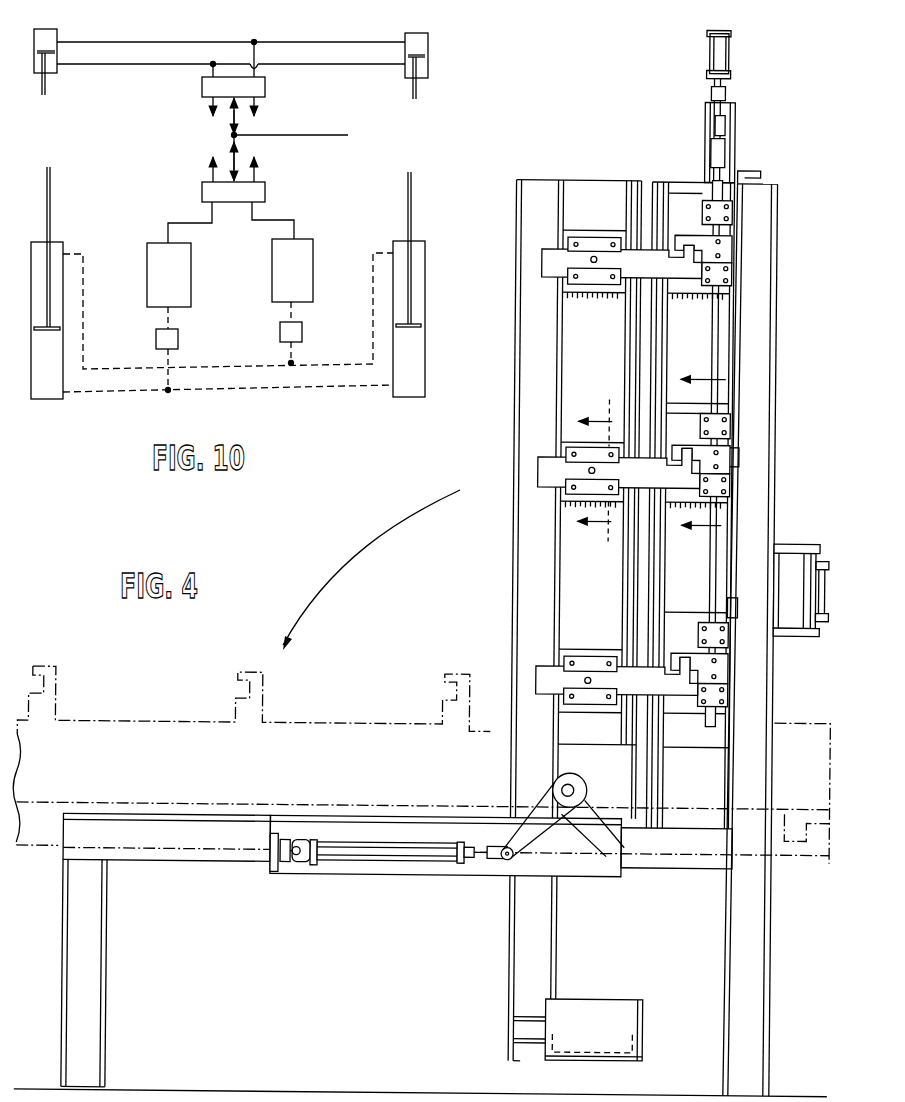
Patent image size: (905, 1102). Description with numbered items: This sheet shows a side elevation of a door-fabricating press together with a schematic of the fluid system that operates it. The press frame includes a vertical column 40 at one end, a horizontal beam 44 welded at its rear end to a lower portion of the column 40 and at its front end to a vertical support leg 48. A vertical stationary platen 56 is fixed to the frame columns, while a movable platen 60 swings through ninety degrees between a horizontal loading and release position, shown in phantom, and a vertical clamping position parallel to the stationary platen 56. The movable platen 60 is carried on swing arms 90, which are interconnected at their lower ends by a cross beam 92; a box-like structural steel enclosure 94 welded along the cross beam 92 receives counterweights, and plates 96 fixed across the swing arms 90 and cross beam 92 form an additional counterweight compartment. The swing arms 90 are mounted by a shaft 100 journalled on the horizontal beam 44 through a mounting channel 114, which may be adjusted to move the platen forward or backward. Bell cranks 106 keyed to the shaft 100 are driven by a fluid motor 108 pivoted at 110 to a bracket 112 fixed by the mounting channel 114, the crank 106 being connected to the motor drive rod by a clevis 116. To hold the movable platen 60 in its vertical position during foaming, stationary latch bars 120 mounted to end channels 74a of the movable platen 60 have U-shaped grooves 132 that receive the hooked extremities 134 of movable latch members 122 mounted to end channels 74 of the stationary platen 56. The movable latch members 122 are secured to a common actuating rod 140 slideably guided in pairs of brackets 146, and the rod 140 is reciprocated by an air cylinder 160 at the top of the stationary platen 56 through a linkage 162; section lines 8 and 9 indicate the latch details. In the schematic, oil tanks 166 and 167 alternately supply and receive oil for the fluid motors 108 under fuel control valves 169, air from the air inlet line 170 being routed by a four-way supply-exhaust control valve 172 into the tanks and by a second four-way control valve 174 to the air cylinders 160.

In FIG. 10, the air cylinder 160 is at (50, 30).
In FIG. 4, the air cylinder 160 is at (712, 52).
In FIG. 10, the second four-way control valve 174 is at (265, 86).
In FIG. 10, the air inlet line 170 is at (280, 134).
In FIG. 10, the four-way supply-exhaust control valve 172 is at (265, 188).
In FIG. 10, the oil tank 166 is at (157, 265).
In FIG. 4, the oil tank 166 is at (795, 562).
In FIG. 10, the oil tank 167 is at (303, 265).
In FIG. 10, the fuel control valve 169 is at (180, 342).
In FIG. 10, the fluid motor 108 is at (49, 393).
In FIG. 4, the fluid motor 108 is at (397, 860).
In FIG. 4, the linkage 162 is at (718, 120).
In FIG. 4, the movable platen 60 is at (581, 178).
In FIG. 4, the stationary platen 56 is at (680, 178).
In FIG. 4, the movable latch bar 122 is at (707, 241).
In FIG. 4, the stationary latch bar 120 is at (540, 263).
In FIG. 4, the end channel 74 is at (698, 318).
In FIG. 4, the end channel 74a is at (582, 612).
In FIG. 4, the actuating rod 140 is at (716, 336).
In FIG. 4, the vertical column 40 is at (765, 379).
In FIG. 4, the swing arm 90 is at (527, 410).
In FIG. 4, the section line 8- 8 is at (702, 452).
In FIG. 4, the section line 9- 9 is at (595, 472).
In FIG. 4, the hooked extremity 134 is at (682, 456).
In FIG. 4, the U-shaped groove 132 is at (670, 467).
In FIG. 4, the bracket 146 is at (701, 634).
In FIG. 4, the shaft 100 is at (563, 781).
In FIG. 4, the bell crank 106 is at (526, 830).
In FIG. 4, the bracket 112 is at (292, 843).
In FIG. 4, the mounting channel 114 is at (373, 823).
In FIG. 4, the clevis 116 is at (504, 864).
In FIG. 4, the pivot 110 is at (292, 870).
In FIG. 4, the horizontal beam 44 is at (150, 842).
In FIG. 4, the vertical support leg 48 is at (107, 1000).
In FIG. 4, the plate 96 is at (512, 956).
In FIG. 4, the box-like structural steel enclosure 94 is at (596, 1005).
In FIG. 4, the cross beam 92 is at (538, 1044).